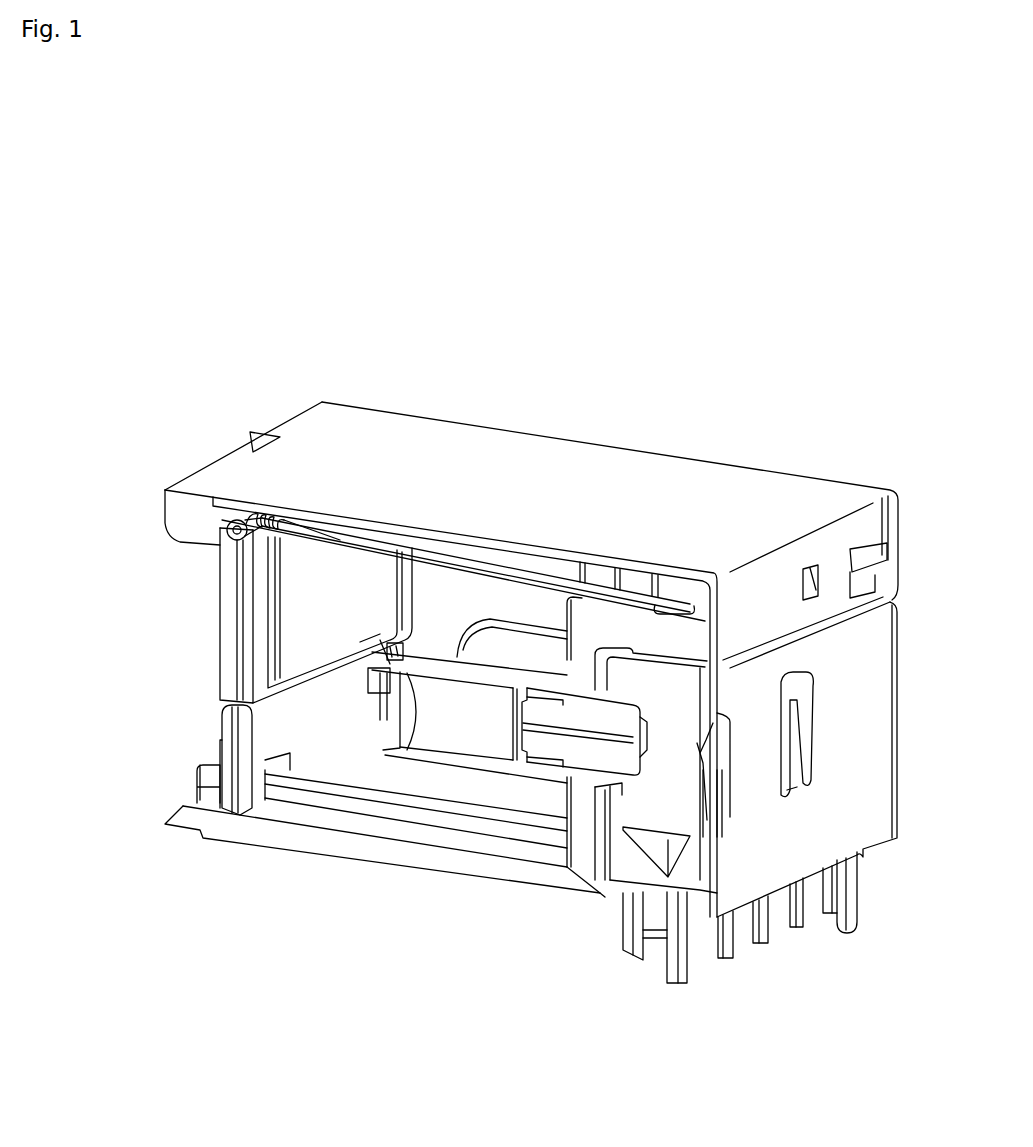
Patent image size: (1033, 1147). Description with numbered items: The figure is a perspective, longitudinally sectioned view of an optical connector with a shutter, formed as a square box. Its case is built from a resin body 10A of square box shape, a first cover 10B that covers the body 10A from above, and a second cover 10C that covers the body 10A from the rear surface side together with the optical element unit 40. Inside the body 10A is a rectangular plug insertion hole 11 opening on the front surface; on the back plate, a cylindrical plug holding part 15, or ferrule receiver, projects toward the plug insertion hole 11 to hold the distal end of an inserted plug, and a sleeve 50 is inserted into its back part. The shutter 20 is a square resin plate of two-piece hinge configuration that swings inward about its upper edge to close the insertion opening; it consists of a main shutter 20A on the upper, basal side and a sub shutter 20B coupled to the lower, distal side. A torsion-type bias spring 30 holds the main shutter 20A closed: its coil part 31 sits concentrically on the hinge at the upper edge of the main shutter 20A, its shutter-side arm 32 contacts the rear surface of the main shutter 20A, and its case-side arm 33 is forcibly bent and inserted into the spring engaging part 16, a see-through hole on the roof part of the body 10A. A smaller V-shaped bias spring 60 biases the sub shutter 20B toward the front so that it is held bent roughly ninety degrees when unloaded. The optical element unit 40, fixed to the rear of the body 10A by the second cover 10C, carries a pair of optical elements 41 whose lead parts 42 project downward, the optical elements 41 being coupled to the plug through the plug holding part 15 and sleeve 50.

The body 10A is at (450, 868).
The first cover 10B is at (493, 478).
The second cover 10C is at (886, 700).
The plug insertion hole 11 is at (367, 773).
The plug holding part 15 is at (443, 767).
The spring engaging part 16 is at (633, 588).
The shutter 20 is at (199, 721).
The main shutter 20A is at (243, 665).
The sub shutter 20B is at (230, 727).
The bias spring 30 is at (217, 521).
The coil part 31 is at (253, 508).
The arm 32 is at (277, 590).
The arm 33 is at (480, 556).
The optical element unit 40 is at (653, 895).
The optical element 41 is at (657, 810).
The lead part 42 is at (673, 988).
The sleeve 50 is at (595, 716).
The bias spring 60 is at (372, 705).